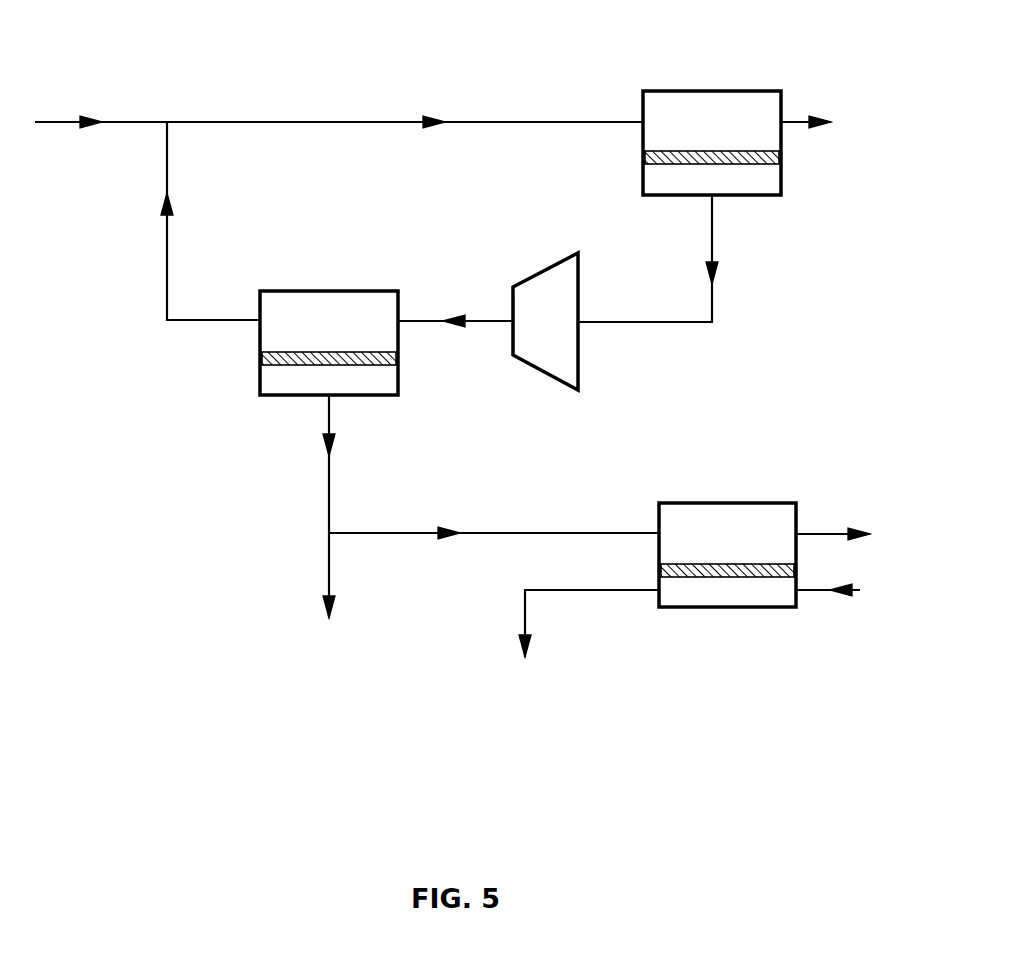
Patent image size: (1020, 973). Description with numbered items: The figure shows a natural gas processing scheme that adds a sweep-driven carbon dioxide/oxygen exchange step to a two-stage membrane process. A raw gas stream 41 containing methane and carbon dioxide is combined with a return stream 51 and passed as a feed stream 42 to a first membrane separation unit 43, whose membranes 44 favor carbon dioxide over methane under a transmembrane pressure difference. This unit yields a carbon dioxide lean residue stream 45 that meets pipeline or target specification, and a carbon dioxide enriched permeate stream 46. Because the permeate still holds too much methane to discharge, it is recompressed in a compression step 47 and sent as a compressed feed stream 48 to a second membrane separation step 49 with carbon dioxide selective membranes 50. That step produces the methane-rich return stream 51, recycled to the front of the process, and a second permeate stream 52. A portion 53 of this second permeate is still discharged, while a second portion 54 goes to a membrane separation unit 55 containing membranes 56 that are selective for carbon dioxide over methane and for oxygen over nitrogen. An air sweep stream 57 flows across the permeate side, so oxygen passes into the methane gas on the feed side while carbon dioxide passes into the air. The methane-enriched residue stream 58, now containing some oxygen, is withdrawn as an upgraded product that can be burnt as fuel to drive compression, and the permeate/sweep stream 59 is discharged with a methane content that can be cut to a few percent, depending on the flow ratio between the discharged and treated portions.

The gas stream 41 is at (101, 108).
The feed stream 42 is at (405, 108).
The first membrane separation unit 43 is at (720, 91).
The membranes 44 is at (705, 151).
The residue stream 45 is at (825, 123).
The permeate stream 46 is at (665, 258).
The compression step 47 is at (578, 355).
The compressed feed stream 48 is at (455, 337).
The second membrane separation step 49 is at (335, 291).
The membranes 50 is at (320, 352).
The return stream 51 is at (210, 221).
The second permeate stream 52 is at (348, 464).
The discharged portion 53 is at (331, 592).
The second portion 54 is at (494, 521).
The membrane separation unit 55 is at (735, 503).
The membranes 56 is at (718, 564).
The air sweep stream 57 is at (850, 591).
The residue stream 58 is at (854, 535).
The permeate/sweep stream 59 is at (585, 641).